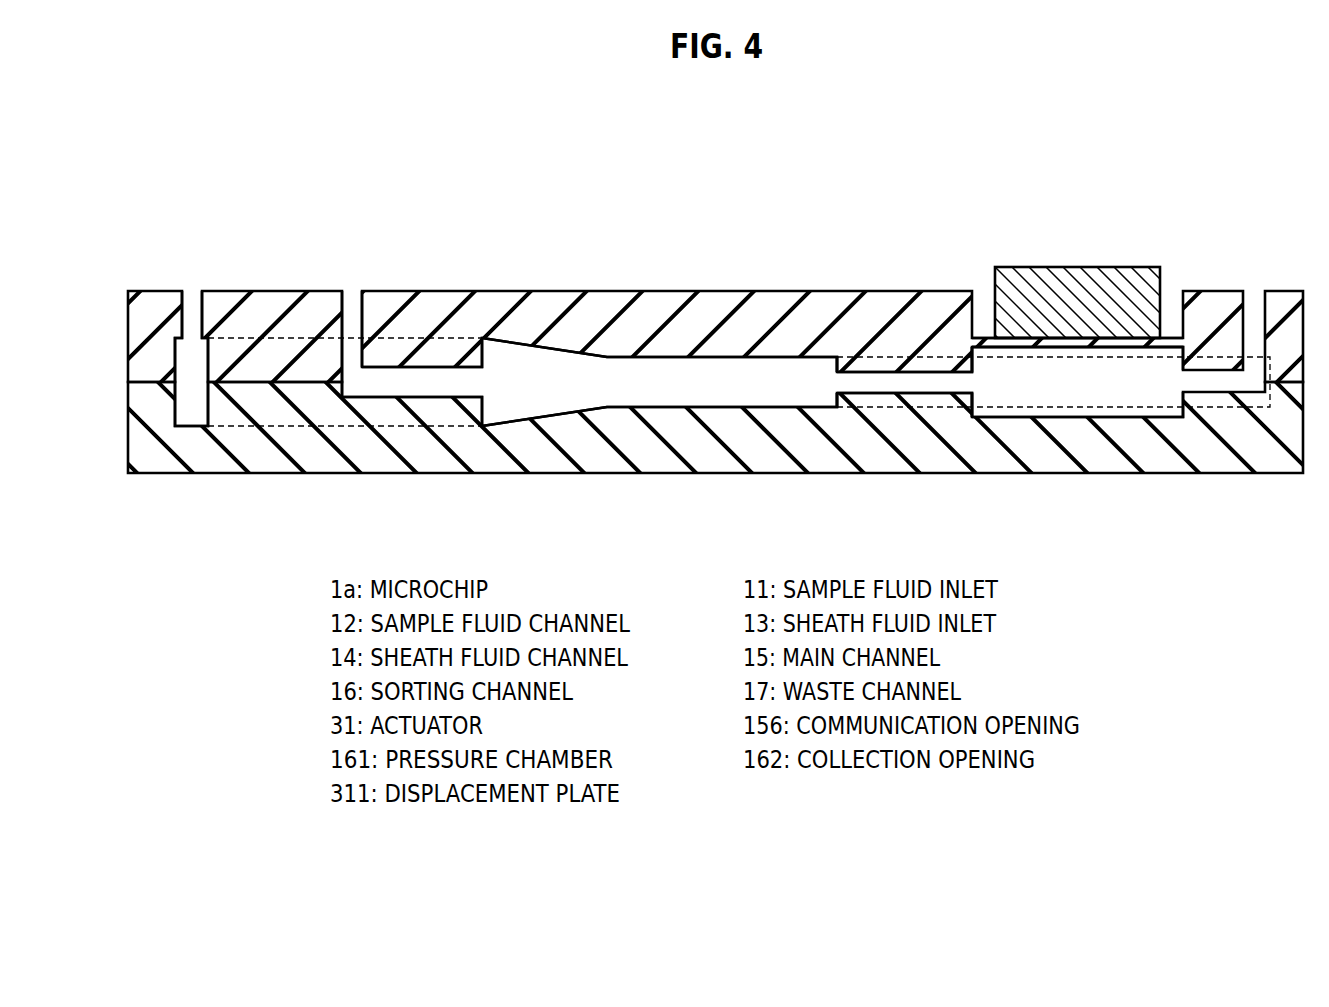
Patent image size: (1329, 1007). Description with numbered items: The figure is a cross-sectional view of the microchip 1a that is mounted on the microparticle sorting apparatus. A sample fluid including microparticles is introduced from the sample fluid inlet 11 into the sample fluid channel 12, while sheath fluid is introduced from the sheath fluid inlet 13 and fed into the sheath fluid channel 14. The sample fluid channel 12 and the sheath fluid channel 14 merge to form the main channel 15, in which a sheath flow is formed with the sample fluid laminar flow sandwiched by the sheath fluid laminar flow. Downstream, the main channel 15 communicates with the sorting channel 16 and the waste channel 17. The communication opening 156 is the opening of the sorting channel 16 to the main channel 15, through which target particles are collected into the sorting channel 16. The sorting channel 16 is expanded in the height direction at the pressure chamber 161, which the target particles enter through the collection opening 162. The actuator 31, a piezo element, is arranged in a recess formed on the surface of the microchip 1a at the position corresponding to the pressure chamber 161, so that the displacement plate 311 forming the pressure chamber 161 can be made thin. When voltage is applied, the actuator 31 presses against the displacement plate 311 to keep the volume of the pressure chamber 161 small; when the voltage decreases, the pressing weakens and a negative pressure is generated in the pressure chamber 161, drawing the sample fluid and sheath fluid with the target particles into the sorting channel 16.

The microchip 1a is at (1288, 288).
The sample fluid inlet 11 is at (352, 290).
The sample fluid channel 12 is at (436, 378).
The sheath fluid inlet 13 is at (192, 288).
The sheath fluid channel 14 is at (245, 338).
The main channel 15 is at (661, 373).
The sorting channel 16 is at (881, 378).
The waste channel 17 is at (900, 407).
The actuator 31 is at (1047, 280).
The communication opening 156 is at (833, 383).
The pressure chamber 161 is at (1117, 385).
The collection opening 162 is at (972, 382).
The displacement plate 311 is at (1122, 343).